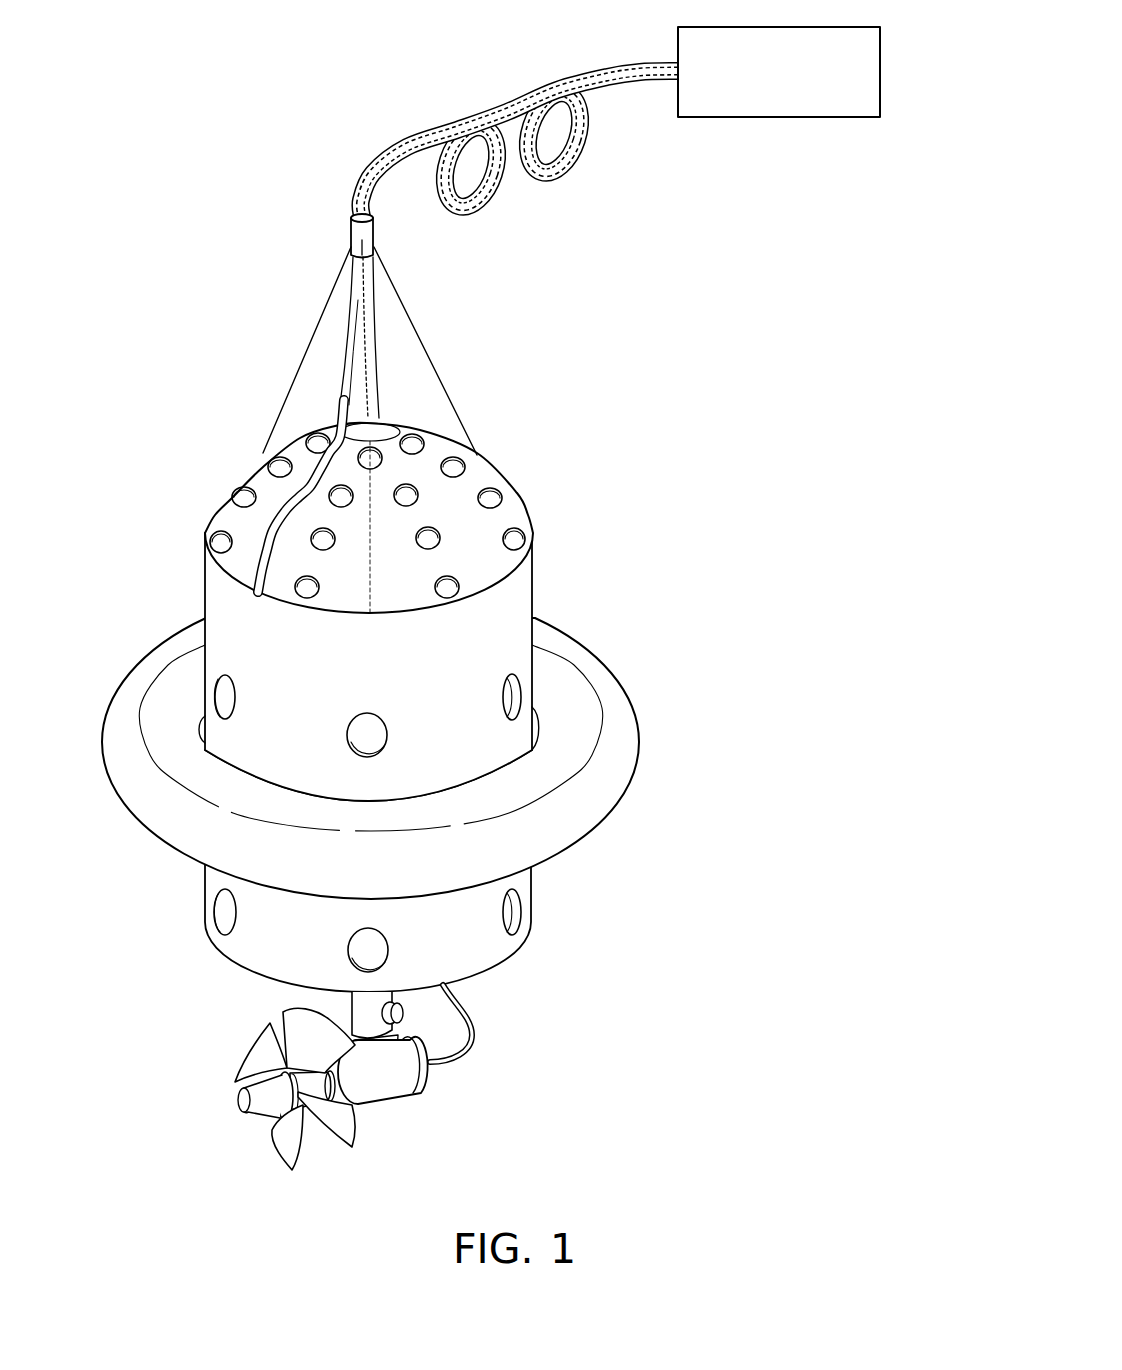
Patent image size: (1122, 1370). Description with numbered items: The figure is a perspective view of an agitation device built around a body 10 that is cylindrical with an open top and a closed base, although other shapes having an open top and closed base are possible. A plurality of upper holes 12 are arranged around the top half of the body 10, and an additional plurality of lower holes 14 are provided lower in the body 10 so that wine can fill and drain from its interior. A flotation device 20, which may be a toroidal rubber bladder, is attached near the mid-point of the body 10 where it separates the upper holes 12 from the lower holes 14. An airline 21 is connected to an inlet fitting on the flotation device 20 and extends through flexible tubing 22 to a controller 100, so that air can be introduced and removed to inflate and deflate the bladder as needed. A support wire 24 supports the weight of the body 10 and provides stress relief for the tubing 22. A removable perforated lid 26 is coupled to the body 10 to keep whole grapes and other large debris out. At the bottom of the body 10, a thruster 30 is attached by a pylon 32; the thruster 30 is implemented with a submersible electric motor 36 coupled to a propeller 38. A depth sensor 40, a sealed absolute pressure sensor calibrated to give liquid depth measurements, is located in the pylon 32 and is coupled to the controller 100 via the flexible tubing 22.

The controller 100 is at (821, 117).
The flexible tubing 22 is at (492, 197).
The support wire 24 is at (435, 363).
The airline 21 is at (262, 547).
The removable perforated lid 26 is at (512, 488).
The body 10 is at (534, 621).
The upper holes 12 is at (232, 673).
The flotation device 20 is at (623, 695).
The lower holes 14 is at (524, 916).
The pylon 32 is at (352, 995).
The depth sensor 40 is at (403, 1012).
The submersible electric motor 36 is at (428, 1083).
The thruster 30 is at (368, 1107).
The propeller 38 is at (268, 1147).